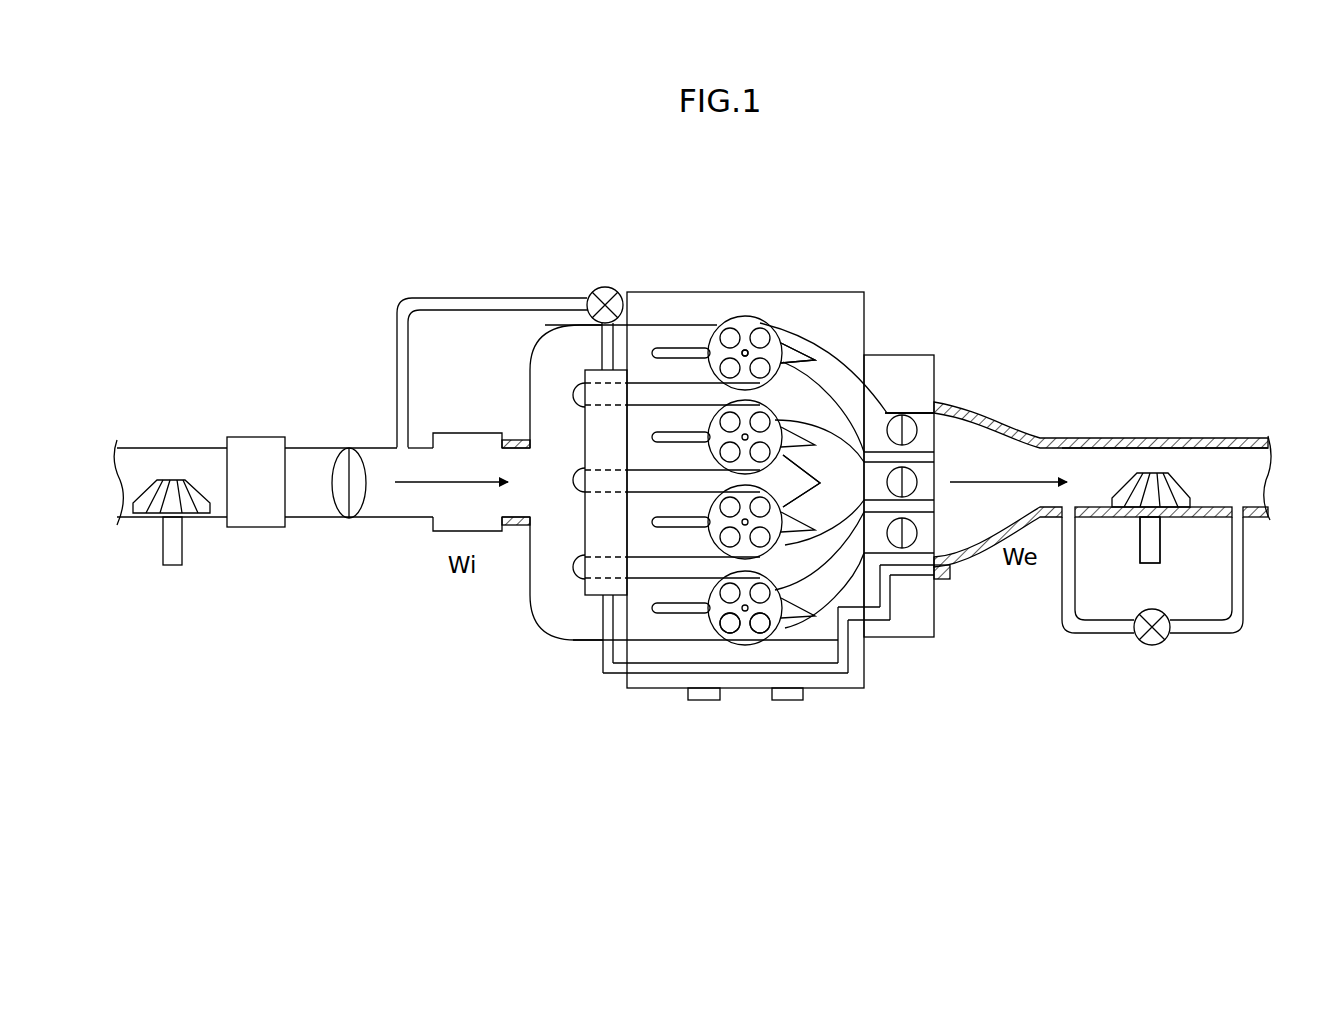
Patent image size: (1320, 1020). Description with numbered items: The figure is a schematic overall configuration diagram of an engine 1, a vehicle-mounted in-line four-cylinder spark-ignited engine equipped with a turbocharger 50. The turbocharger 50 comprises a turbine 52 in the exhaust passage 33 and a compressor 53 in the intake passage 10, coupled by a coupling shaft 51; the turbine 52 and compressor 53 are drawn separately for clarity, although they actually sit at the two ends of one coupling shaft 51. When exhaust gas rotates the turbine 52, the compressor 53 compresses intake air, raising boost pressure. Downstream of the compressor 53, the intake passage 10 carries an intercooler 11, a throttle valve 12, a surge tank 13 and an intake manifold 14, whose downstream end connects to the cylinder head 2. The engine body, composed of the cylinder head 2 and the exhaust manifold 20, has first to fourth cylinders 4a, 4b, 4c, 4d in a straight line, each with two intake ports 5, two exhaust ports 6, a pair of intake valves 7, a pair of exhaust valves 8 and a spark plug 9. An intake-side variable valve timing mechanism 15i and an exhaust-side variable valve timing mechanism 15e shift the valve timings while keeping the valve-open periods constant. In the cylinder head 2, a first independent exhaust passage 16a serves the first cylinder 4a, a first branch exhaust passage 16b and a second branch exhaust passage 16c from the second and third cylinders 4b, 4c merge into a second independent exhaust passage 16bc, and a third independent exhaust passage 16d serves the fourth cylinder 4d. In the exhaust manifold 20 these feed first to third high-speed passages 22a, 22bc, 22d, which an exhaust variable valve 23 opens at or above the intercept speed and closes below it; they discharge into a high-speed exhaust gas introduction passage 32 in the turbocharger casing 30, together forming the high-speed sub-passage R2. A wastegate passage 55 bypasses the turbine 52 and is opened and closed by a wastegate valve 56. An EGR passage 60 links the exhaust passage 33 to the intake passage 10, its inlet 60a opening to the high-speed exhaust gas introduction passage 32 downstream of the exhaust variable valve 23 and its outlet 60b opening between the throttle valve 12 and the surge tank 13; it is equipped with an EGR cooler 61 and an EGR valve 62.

The engine 1 is at (343, 310).
The cylinder head 2 is at (705, 300).
The first cylinder 4a is at (748, 645).
The second cylinder 4b is at (748, 552).
The third cylinder 4c is at (727, 398).
The fourth cylinder 4d is at (753, 320).
The intake port 5 is at (690, 345).
The exhaust port 6 is at (792, 342).
The intake valve 7 is at (705, 640).
The exhaust valve 8 is at (770, 635).
The spark plug 9 is at (745, 345).
The intake passage 10 is at (315, 448).
The intercooler 11 is at (255, 437).
The throttle valve 12 is at (352, 515).
The surge tank 13 is at (465, 440).
The intake manifold 14 is at (545, 332).
The intake-side variable valve timing mechanism 15i is at (703, 700).
The exhaust-side variable valve timing mechanism 15e is at (785, 700).
The first independent exhaust passage 16a is at (800, 640).
The first branch exhaust passage 16b is at (845, 640).
The second independent exhaust passage 16bc is at (905, 565).
The second branch exhaust passage 16c is at (852, 425).
The third independent exhaust passage 16d is at (825, 350).
The exhaust manifold 20 is at (895, 368).
The first high-speed passage 22a is at (920, 535).
The second high-speed passage 22bc is at (972, 418).
The third high-speed passage 22d is at (900, 415).
The exhaust variable valve 23 is at (915, 410).
The turbocharger casing 30 is at (1018, 432).
The high-speed exhaust gas introduction passage 32 is at (983, 468).
The exhaust passage 33 is at (1237, 438).
The turbocharger 50 is at (1121, 540).
The coupling shaft 51 is at (1150, 550).
The turbine 52 is at (1175, 475).
The compressor 53 is at (170, 480).
The wastegate passage 55 is at (1068, 630).
The wastegate valve 56 is at (1152, 645).
The EGR passage 60 is at (455, 300).
The inlet 60a is at (947, 578).
The outlet 60b is at (400, 443).
The EGR cooler 61 is at (590, 535).
The EGR valve 62 is at (604, 287).
The high-speed sub-passage R2 is at (1013, 354).